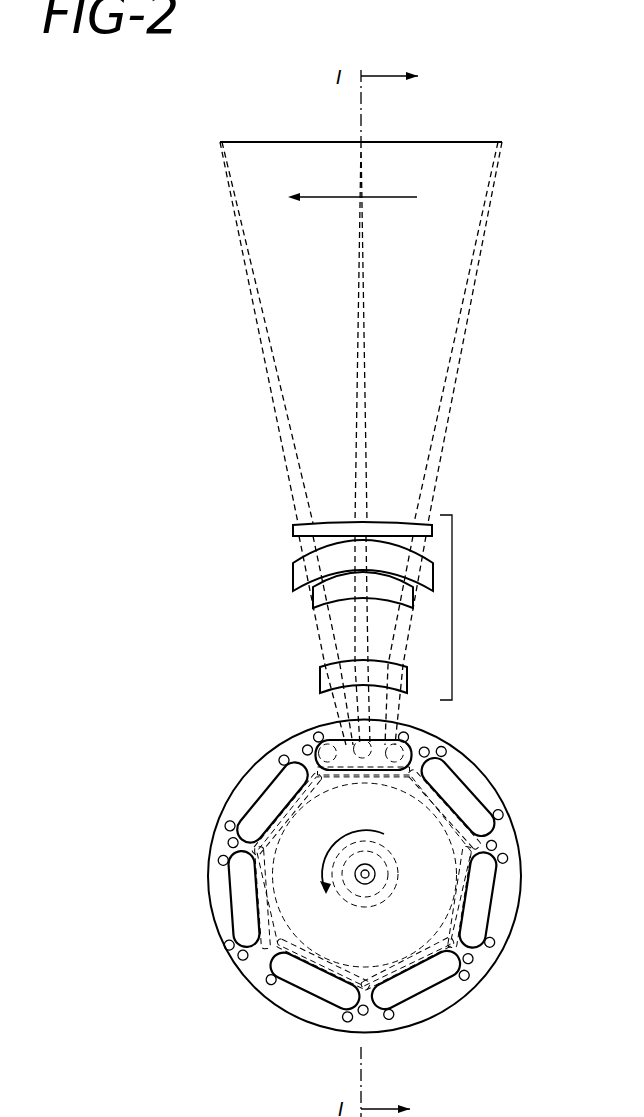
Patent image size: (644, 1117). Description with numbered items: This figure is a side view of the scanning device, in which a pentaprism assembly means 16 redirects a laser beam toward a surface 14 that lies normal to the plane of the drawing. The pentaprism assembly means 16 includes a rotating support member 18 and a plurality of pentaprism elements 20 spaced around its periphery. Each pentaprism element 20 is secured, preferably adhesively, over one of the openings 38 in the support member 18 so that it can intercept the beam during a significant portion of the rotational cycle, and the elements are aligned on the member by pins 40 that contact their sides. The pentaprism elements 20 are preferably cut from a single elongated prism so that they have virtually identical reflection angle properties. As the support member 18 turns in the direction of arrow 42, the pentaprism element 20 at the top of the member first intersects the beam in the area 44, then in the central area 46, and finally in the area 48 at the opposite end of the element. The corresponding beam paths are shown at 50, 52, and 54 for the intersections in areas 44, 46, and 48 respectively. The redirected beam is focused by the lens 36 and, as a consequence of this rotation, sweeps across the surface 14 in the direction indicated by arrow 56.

The surface 14 is at (440, 142).
The pentaprism assembly means 16 is at (372, 865).
The support member 18 is at (520, 884).
The pentaprism elements 20 is at (400, 722).
The lens 36 is at (452, 590).
The openings 38 is at (246, 808).
The pins 40 is at (295, 757).
The arrow 42 is at (372, 834).
The area 44 is at (318, 738).
The central area 46 is at (341, 733).
The area 48 is at (448, 748).
The beam path 50 is at (265, 325).
The beam path 52 is at (362, 311).
The beam path 54 is at (470, 310).
The arrow 56 is at (417, 197).